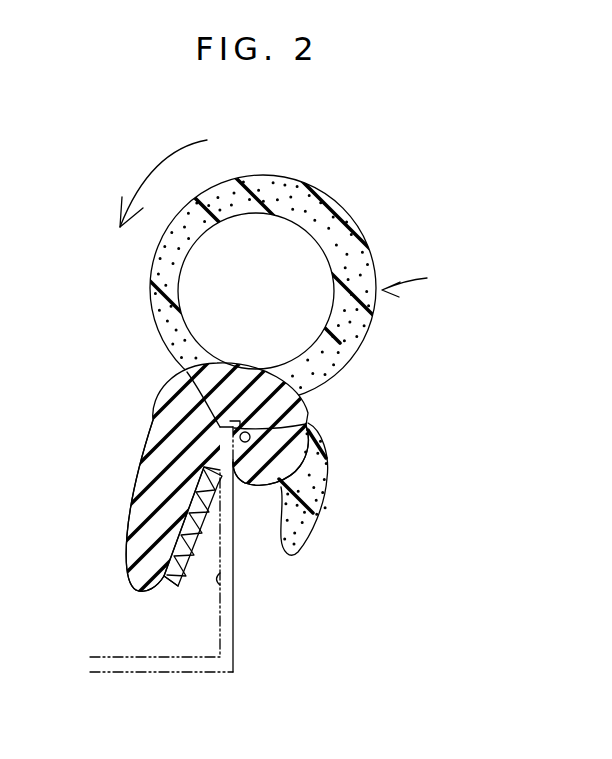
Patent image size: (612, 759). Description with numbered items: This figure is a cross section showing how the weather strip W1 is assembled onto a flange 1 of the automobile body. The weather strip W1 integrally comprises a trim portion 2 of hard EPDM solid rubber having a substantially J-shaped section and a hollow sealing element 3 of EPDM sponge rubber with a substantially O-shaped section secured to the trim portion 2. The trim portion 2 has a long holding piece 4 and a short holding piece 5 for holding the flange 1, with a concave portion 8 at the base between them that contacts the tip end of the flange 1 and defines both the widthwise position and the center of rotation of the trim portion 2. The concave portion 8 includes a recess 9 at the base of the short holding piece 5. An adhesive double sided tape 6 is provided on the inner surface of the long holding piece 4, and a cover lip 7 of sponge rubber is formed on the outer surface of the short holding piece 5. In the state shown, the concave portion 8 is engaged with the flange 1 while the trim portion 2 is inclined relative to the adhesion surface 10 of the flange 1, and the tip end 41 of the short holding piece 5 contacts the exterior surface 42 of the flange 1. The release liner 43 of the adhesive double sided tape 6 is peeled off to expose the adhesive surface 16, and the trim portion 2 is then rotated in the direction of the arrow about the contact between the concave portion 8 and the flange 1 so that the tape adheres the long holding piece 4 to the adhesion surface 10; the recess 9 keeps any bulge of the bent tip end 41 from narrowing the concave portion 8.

The flange 1 is at (237, 657).
The trim portion 2 is at (152, 410).
The hollow sealing element 3 is at (363, 230).
The long holding piece 4 is at (138, 550).
The short holding piece 5 is at (262, 453).
The adhesive double sided tape 6 is at (162, 584).
The cover lip 7 is at (317, 493).
The concave portion 8 is at (229, 415).
The recess 9 is at (307, 423).
The adhesion surface 10 is at (237, 600).
The adhesive surface 16 is at (180, 584).
The tip end 41 is at (243, 475).
The exterior surface 42 is at (243, 558).
The release liner 43 is at (192, 568).
The weather strip W1 is at (426, 282).